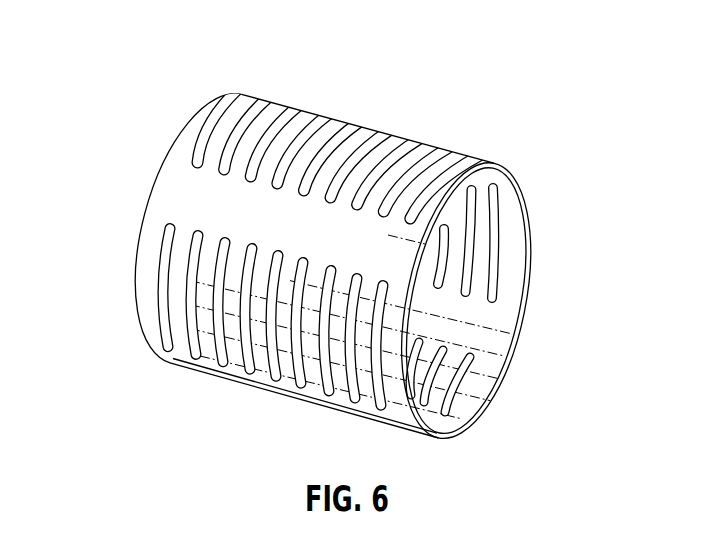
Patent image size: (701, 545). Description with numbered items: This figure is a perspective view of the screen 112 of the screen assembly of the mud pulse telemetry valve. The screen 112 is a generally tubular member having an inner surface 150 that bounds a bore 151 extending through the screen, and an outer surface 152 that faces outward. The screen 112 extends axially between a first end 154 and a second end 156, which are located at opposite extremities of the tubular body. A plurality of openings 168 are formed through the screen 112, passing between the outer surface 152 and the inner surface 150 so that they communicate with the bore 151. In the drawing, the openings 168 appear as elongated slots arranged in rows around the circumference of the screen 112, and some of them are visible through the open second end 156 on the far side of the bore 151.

The screen 112 is at (343, 81).
The inner surface 150 is at (518, 230).
The bore 151 is at (492, 336).
The outer surface 152 is at (377, 126).
The first end 154 is at (138, 269).
The second end 156 is at (461, 420).
The openings 168 is at (200, 358).